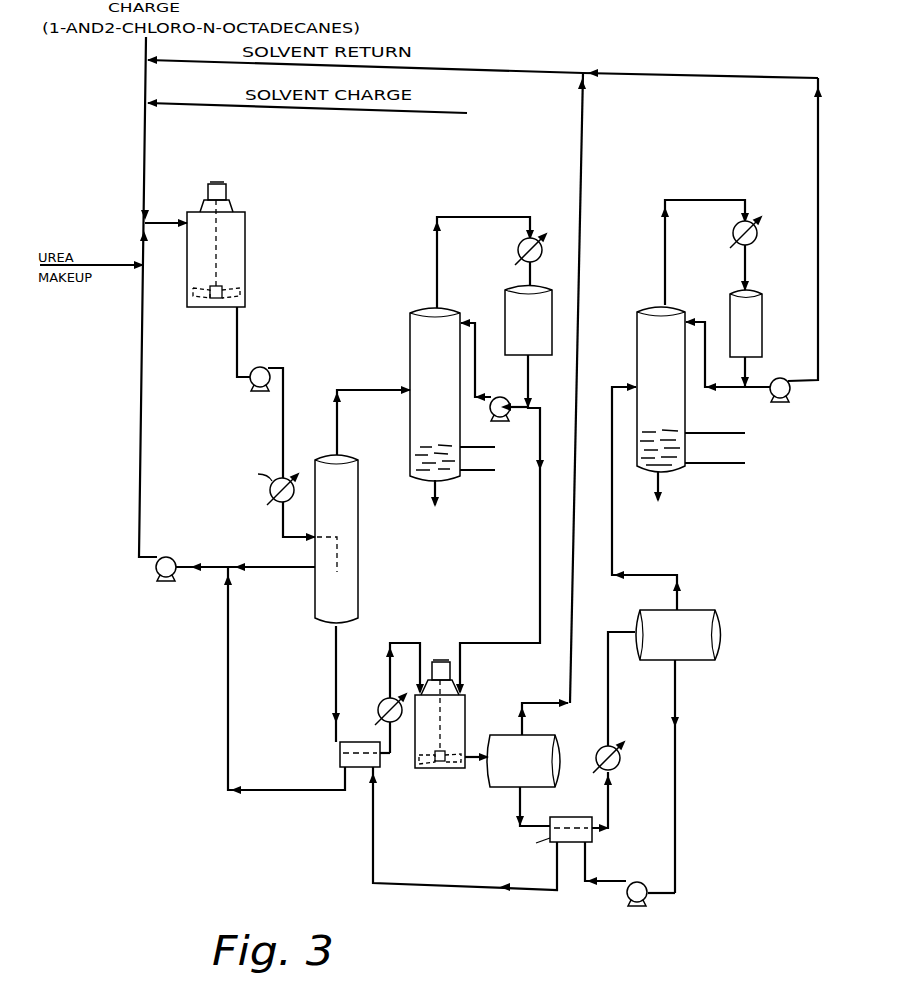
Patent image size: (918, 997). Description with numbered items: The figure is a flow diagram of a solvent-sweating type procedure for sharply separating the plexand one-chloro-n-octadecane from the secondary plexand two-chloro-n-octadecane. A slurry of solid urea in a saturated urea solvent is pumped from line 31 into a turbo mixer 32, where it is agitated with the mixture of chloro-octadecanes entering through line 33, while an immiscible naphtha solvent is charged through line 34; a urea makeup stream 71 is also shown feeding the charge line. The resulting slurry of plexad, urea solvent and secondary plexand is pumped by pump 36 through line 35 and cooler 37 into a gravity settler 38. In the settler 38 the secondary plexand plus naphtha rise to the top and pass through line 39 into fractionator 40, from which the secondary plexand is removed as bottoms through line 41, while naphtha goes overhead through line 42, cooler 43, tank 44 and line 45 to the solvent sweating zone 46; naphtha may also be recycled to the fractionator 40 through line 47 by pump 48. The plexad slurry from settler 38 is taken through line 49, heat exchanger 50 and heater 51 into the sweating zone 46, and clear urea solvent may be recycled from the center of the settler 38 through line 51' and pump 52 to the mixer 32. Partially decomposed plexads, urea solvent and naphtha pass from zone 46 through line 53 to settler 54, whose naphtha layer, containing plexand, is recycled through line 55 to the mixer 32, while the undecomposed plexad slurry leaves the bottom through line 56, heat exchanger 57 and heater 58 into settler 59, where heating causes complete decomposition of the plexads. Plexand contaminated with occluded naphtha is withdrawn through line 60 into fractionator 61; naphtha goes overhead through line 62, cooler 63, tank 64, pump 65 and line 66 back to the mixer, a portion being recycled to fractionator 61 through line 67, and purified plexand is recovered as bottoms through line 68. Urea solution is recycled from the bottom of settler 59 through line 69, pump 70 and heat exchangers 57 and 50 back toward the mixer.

The line 31 is at (159, 228).
The turbo mixer 32 is at (232, 275).
The line 33 is at (143, 152).
The line 34 is at (202, 105).
The line 35 is at (235, 331).
The pump 36 is at (248, 390).
The cooler 37 is at (268, 496).
The gravity settler 38 is at (364, 539).
The line 39 is at (383, 372).
The fractionator 40 is at (400, 394).
The line 41 is at (438, 489).
The line 42 is at (435, 265).
The cooler 43 is at (518, 252).
The tank 44 is at (528, 321).
The line 45 is at (544, 418).
The solvent sweating zone 46 is at (467, 700).
The line 47 is at (468, 320).
The pump 48 is at (490, 406).
The line 49 is at (333, 652).
The heat exchanger 50 is at (366, 772).
The heater 51 is at (376, 701).
The line 51' is at (245, 583).
The pump 52 is at (155, 574).
The line 53 is at (478, 766).
The settler 54 is at (523, 761).
The line 55 is at (211, 62).
The line 56 is at (517, 807).
The heat exchanger 57 is at (585, 815).
The heater 58 is at (623, 758).
The settler 59 is at (706, 658).
The line 60 is at (670, 560).
The fractionator 61 is at (665, 389).
The line 62 is at (662, 262).
The cooler 63 is at (733, 234).
The tank 64 is at (765, 323).
The pump 65 is at (774, 402).
The line 66 is at (748, 60).
The line 67 is at (712, 391).
The line 68 is at (662, 486).
The line 69 is at (270, 790).
The pump 70 is at (650, 901).
The urea makeup line 71 is at (128, 262).